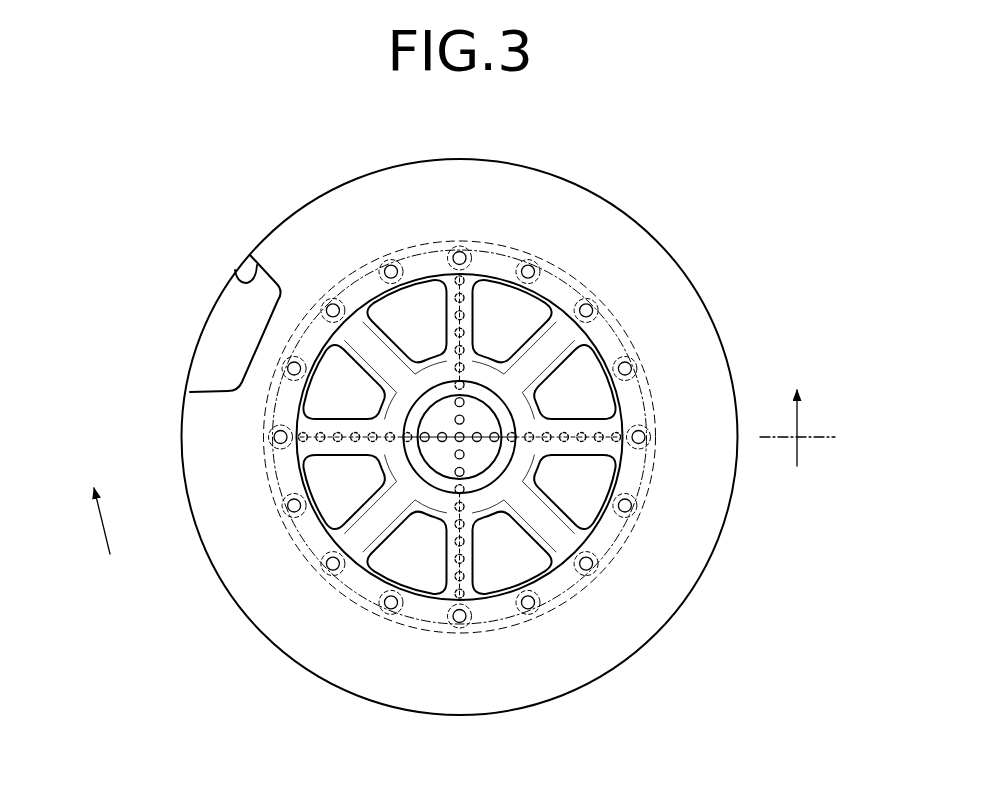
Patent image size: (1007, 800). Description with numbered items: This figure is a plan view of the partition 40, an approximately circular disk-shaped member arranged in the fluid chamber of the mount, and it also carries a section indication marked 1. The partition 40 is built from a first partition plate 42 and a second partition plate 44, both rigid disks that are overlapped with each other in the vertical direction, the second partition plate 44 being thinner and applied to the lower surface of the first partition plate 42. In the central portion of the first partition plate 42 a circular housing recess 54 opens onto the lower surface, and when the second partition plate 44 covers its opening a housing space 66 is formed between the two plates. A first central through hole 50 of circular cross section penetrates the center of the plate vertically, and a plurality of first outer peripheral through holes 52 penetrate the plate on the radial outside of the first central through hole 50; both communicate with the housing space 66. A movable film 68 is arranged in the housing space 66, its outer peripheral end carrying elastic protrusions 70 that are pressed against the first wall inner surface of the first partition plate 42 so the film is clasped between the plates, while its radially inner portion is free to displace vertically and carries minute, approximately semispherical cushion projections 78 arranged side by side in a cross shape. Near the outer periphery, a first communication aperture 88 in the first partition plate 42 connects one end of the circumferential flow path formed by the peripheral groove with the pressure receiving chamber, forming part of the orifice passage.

The partition 40 is at (748, 266).
The first partition plate 42 is at (276, 223).
The second partition plate 44 is at (208, 297).
The first communication aperture 88 is at (235, 270).
The first central through hole 50 is at (483, 417).
The first outer peripheral through holes 52 is at (444, 302).
The housing recess 54 is at (650, 247).
The housing space 66 is at (588, 300).
The elastic protrusions 70 is at (461, 246).
The cushion projections 78 is at (440, 437).
The movable film 68 is at (258, 485).
The section line 1 is at (461, 505).